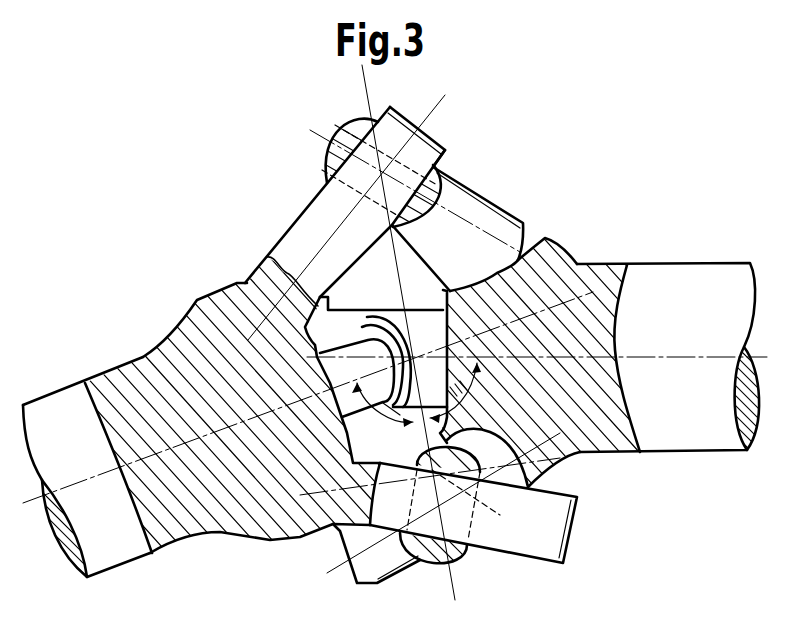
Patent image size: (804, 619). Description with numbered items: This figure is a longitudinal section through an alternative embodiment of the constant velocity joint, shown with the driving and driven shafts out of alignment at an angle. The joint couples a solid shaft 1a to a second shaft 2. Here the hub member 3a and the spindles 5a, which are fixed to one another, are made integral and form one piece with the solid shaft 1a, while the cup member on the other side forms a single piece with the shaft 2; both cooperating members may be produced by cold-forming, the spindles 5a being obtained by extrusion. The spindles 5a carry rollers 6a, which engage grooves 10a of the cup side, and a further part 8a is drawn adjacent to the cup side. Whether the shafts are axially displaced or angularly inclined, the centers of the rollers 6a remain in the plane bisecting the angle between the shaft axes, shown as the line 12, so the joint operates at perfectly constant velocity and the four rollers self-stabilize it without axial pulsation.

The solid shaft 1a is at (60, 403).
The shaft 2 is at (700, 440).
The hub member 3a is at (203, 347).
The spindles 5a is at (293, 260).
The rollers 6a is at (343, 135).
The bearing boss 8a is at (530, 238).
The grooves 10a is at (477, 218).
The line 12 is at (378, 85).